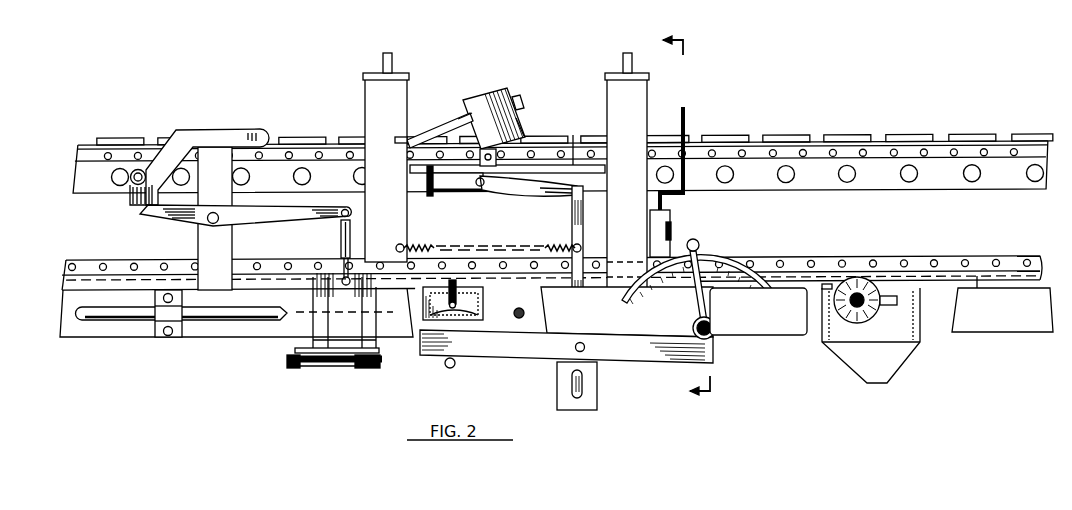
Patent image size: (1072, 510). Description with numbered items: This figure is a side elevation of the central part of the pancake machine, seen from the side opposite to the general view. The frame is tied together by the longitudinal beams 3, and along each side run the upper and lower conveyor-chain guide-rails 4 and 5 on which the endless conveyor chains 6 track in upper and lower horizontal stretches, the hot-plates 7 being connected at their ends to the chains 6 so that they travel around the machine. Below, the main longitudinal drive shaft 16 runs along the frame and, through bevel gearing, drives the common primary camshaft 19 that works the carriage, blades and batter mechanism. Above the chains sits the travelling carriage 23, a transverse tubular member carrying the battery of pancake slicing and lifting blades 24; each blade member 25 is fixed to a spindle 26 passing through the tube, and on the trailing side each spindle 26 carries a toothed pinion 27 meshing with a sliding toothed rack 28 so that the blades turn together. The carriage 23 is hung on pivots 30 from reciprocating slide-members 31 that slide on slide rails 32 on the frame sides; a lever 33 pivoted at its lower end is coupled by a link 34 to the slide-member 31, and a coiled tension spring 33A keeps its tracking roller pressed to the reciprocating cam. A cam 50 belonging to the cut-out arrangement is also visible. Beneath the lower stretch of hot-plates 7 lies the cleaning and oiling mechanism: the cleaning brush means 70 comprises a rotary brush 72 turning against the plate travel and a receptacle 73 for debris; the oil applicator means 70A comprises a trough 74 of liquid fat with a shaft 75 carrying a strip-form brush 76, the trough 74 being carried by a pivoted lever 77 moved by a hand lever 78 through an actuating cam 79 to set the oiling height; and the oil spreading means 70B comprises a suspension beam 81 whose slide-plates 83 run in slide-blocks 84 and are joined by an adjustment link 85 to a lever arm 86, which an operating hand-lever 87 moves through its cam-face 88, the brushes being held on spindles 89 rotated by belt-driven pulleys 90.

The longitudinal beam 3 is at (1021, 344).
The upper conveyor-chain guide-rail 4 is at (278, 165).
The lower conveyor-chain guide-rail 5 is at (85, 283).
The endless conveyor chain 6 is at (822, 168).
The hot-plate 7 is at (120, 146).
The main longitudinal drive shaft 16 is at (130, 318).
The common primary camshaft 19 is at (527, 319).
The travelling carriage 23 is at (483, 99).
The pancake slicing and lifting blades 24 is at (509, 90).
The blade member 25 is at (440, 124).
The spindle 26 is at (462, 116).
The toothed pinion 27 is at (524, 110).
The toothed rack 28 is at (522, 126).
The pivot 30 is at (520, 168).
The reciprocating slide-member 31 is at (465, 188).
The slide rail 32 is at (573, 135).
The lever 33 is at (571, 218).
The coiled tension spring 33A is at (484, 247).
The link 34 is at (506, 195).
The cam 50 is at (681, 205).
The cleaning brush means 70 is at (931, 333).
The oil applicator means 70A is at (470, 356).
The oil spreading means 70B is at (300, 372).
The rotary brush 72 is at (896, 297).
The receptacle 73 is at (850, 360).
The trough 74 is at (440, 334).
The shaft 75 is at (480, 312).
The strip-form brush 76 is at (466, 291).
The pivoted lever 77 is at (553, 346).
The hand lever 78 is at (707, 304).
The actuating cam 79 is at (712, 335).
The suspension beam 81 is at (380, 351).
The slide-plate 83 is at (344, 310).
The slide-block 84 is at (318, 316).
The adjustment link 85 is at (356, 246).
The lever arm 86 is at (291, 213).
The operating hand-lever 87 is at (222, 129).
The cam-face 88 is at (132, 203).
The spindle 89 is at (325, 366).
The belt-driven pulley 90 is at (372, 369).